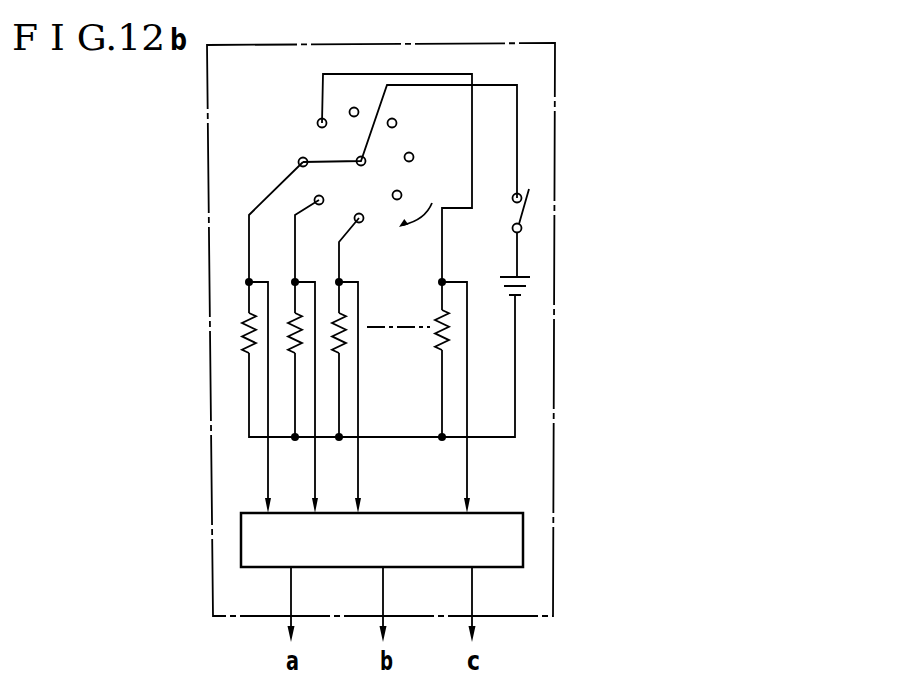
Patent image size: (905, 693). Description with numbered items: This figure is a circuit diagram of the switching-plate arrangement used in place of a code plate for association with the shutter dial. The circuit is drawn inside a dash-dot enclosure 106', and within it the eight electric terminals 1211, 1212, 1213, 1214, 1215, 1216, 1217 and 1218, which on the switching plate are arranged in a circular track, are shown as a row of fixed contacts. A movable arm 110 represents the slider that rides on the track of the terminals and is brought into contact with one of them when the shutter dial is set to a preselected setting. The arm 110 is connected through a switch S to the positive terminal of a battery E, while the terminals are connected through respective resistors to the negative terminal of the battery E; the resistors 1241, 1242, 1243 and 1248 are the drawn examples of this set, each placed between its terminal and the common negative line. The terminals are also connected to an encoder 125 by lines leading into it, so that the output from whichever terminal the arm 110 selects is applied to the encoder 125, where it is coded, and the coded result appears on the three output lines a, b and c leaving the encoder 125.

The code plate / switch unit enclosure 106' is at (381, 308).
The movable contact arm 110 is at (323, 167).
The electric terminal 1211 is at (303, 157).
The electric terminal 1212 is at (319, 204).
The electric terminal 1213 is at (363, 220).
The electric terminal 1214 is at (409, 182).
The electric terminal 1215 is at (421, 143).
The electric terminal 1216 is at (403, 109).
The electric terminal 1217 is at (350, 110).
The electric terminal 1218 is at (319, 119).
The resistor 1241 is at (243, 333).
The resistor 1242 is at (289, 333).
The resistor 1243 is at (333, 333).
The resistor 1248 is at (438, 335).
The encoder 125 is at (495, 530).
The switch S is at (515, 233).
The battery E is at (522, 288).